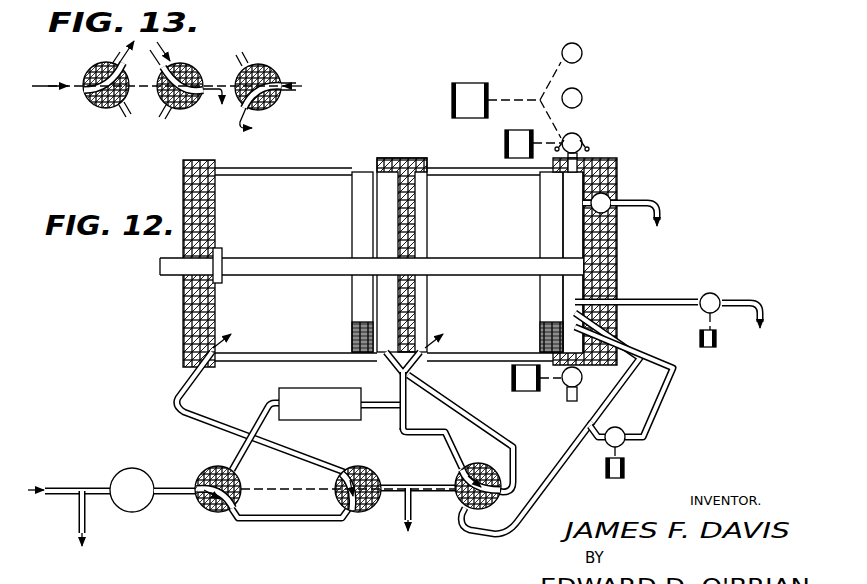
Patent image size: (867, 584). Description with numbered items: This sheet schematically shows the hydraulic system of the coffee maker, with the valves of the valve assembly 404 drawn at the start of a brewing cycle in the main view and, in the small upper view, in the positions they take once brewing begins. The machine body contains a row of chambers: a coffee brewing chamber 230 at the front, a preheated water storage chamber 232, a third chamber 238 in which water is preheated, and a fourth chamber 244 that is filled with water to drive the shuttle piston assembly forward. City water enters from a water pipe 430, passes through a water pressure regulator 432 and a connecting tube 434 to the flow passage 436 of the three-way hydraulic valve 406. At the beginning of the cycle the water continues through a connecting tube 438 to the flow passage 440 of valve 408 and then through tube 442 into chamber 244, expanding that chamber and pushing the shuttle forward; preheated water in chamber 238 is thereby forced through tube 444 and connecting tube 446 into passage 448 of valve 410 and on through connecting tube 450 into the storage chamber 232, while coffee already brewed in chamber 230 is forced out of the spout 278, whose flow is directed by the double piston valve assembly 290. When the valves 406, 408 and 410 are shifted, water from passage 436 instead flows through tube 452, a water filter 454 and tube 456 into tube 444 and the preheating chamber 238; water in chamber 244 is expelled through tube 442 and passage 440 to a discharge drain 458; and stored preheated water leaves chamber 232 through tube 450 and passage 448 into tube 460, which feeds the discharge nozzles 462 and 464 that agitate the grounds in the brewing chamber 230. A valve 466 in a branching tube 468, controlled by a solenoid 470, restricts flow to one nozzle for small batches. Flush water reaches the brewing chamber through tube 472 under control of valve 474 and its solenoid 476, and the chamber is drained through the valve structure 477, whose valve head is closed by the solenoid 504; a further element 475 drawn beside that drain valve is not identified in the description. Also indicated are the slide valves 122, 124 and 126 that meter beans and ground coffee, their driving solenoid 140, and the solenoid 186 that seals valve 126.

In FIG. 12, the slide valve 122 is at (583, 53).
In FIG. 12, the slide valve 124 is at (583, 98).
In FIG. 12, the third slide valve 126 is at (583, 139).
In FIG. 12, the solenoid 140 is at (465, 96).
In FIG. 12, the solenoid 186 is at (505, 144).
In FIG. 12, the third chamber 238 is at (383, 190).
In FIG. 12, the double piston valve assembly 290 is at (621, 183).
In FIG. 12, the spout 278 is at (636, 200).
In FIG. 12, the coffee brewing chamber 230 is at (571, 262).
In FIG. 12, the tube 472 is at (605, 300).
In FIG. 12, the valve 474 is at (717, 297).
In FIG. 12, the solenoid 476 is at (712, 342).
In FIG. 12, the discharge nozzle 464 is at (576, 312).
In FIG. 12, the discharge nozzle 462 is at (576, 328).
In FIG. 12, the fourth chamber 244 is at (300, 307).
In FIG. 12, the preheated water storage chamber 232 is at (501, 307).
In FIG. 12, the solenoid 504 is at (512, 378).
In FIG. 12, the valve structure 477 is at (583, 378).
In FIG. 12, the valve stem 475 is at (569, 397).
In FIG. 12, the valve 466 is at (613, 427).
In FIG. 12, the tube 468 is at (652, 425).
In FIG. 12, the solenoid 470 is at (624, 468).
In FIG. 12, the tube 460 is at (543, 492).
In FIG. 12, the connecting tube 450 is at (458, 410).
In FIG. 12, the connecting tube 446 is at (413, 436).
In FIG. 12, the tube 456 is at (383, 409).
In FIG. 12, the tube 444 is at (394, 375).
In FIG. 12, the water filter 454 is at (303, 387).
In FIG. 12, the tube 442 is at (226, 425).
In FIG. 12, the tube 452 is at (243, 455).
In FIG. 12, the flow passage 440 is at (348, 471).
In FIG. 12, the line 438 is at (289, 500).
In FIG. 12, the flow passage 436 is at (208, 479).
In FIG. 12, the water pressure regulator 432 is at (143, 468).
In FIG. 12, the connecting tube 434 is at (170, 484).
In FIG. 12, the water pipe 430 is at (62, 487).
In FIG. 13, the three-way hydraulic valve 406 is at (100, 100).
In FIG. 12, the three-way hydraulic valve 406 is at (212, 507).
In FIG. 12, the discharge drain 458 is at (412, 492).
In FIG. 13, the three-way hydraulic valve 410 is at (271, 104).
In FIG. 12, the three-way hydraulic valve 410 is at (463, 507).
In FIG. 12, the passage 448 is at (479, 510).
In FIG. 13, the three-way hydraulic valve 408 is at (183, 108).
In FIG. 12, the three-way hydraulic valve 408 is at (352, 513).
In FIG. 13, the valve assembly 404 is at (227, 52).
In FIG. 12, the valve assembly 404 is at (310, 542).